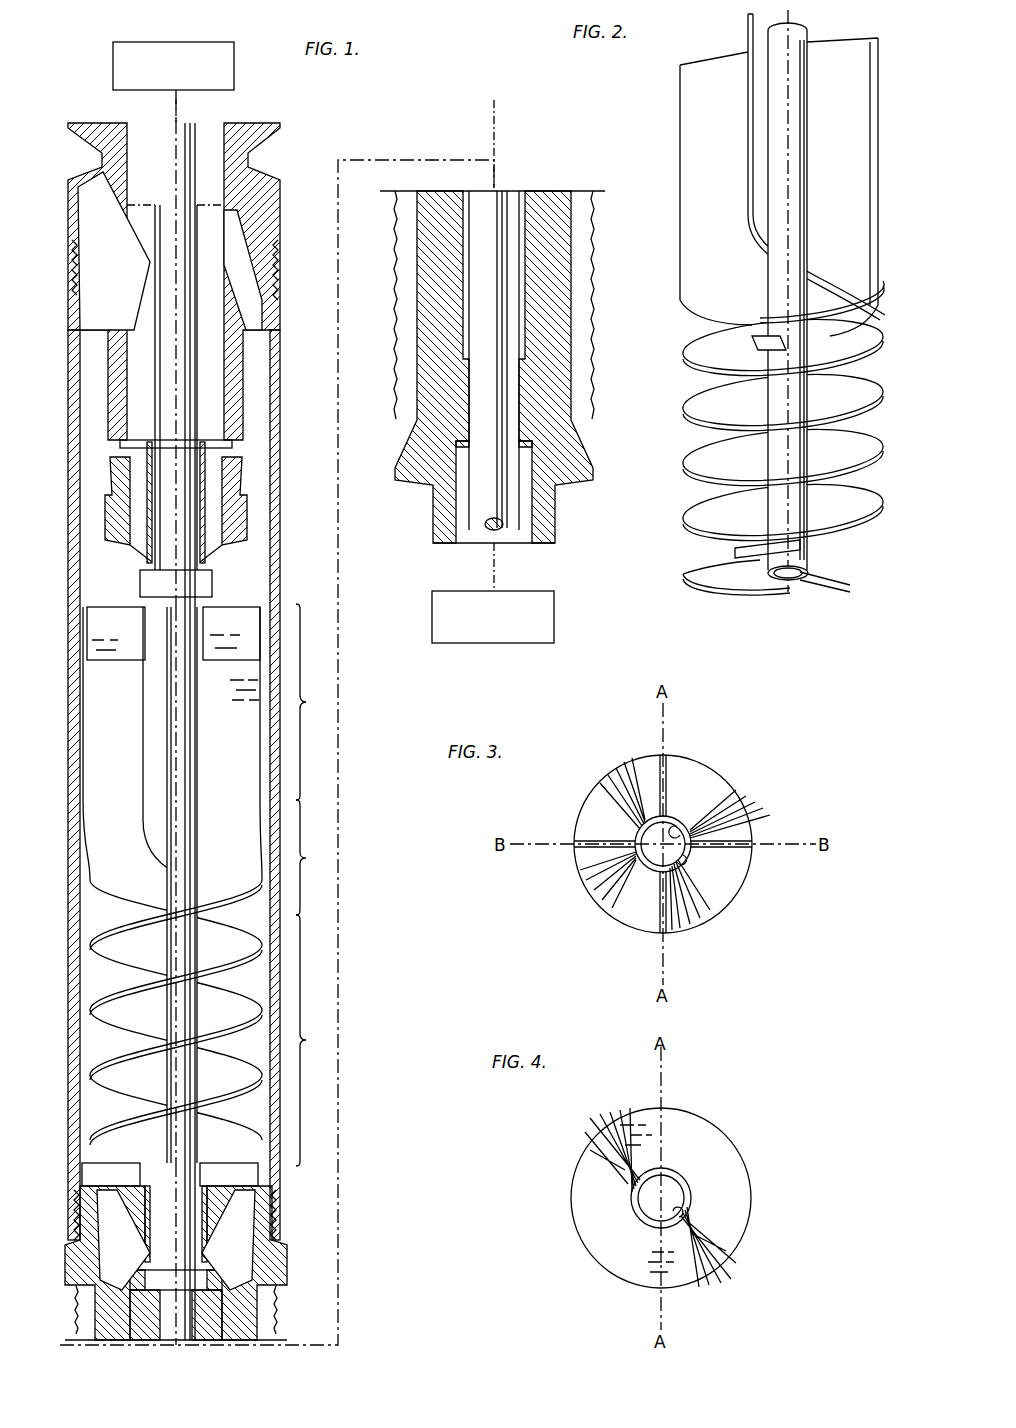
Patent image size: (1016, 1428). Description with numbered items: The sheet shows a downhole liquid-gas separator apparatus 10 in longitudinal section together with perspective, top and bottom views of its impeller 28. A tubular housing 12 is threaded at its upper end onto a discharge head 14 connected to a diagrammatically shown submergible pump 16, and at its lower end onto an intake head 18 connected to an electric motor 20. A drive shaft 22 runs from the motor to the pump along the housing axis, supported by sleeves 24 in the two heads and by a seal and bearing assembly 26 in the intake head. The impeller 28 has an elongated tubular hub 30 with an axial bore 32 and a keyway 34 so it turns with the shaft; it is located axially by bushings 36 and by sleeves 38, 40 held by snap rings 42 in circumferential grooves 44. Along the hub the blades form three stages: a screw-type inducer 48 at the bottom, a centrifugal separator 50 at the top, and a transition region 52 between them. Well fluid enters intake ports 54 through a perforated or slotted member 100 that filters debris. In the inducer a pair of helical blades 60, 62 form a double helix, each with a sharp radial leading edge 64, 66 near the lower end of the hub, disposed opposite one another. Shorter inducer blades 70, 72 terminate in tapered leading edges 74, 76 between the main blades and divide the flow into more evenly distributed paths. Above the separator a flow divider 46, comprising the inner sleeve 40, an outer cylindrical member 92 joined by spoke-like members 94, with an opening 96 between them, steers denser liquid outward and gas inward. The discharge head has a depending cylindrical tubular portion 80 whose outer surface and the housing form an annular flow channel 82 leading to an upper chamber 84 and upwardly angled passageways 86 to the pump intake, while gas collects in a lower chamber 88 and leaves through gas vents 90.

In FIG. 1, the liquid-gas separator apparatus 10 is at (54, 230).
In FIG. 1, the tubular housing 12 is at (70, 647).
In FIG. 1, the discharge head 14 is at (268, 190).
In FIG. 1, the submergible pump 16 is at (233, 42).
In FIG. 1, the intake head 18 is at (72, 1265).
In FIG. 1, the electric motor 20 is at (455, 643).
In FIG. 1, the drive shaft 22 is at (192, 138).
In FIG. 1, the sleeves 24 is at (196, 300).
In FIG. 1, the seal and bearing assembly 26 is at (176, 1316).
In FIG. 1, the impeller 28 is at (97, 981).
In FIG. 2, the impeller 28 is at (652, 120).
In FIG. 3, the impeller 28 is at (560, 890).
In FIG. 4, the impeller 28 is at (575, 1138).
In FIG. 1, the tubular hub 30 is at (196, 632).
In FIG. 2, the tubular hub 30 is at (808, 42).
In FIG. 3, the tubular hub 30 is at (642, 820).
In FIG. 4, the tubular hub 30 is at (645, 1226).
In FIG. 2, the axial bore 32 is at (775, 582).
In FIG. 3, the axial bore 32 is at (688, 855).
In FIG. 4, the axial bore 32 is at (640, 1202).
In FIG. 2, the keyway 34 is at (784, 584).
In FIG. 3, the keyway 34 is at (682, 822).
In FIG. 4, the keyway 34 is at (683, 1209).
In FIG. 1, the bushings 36 is at (145, 607).
In FIG. 1, the sleeve 38 is at (202, 1202).
In FIG. 1, the sleeve 40 is at (142, 567).
In FIG. 1, the snap rings 42 is at (148, 441).
In FIG. 1, the circumferential grooves 44 is at (170, 438).
In FIG. 1, the flow divider 46 is at (258, 532).
In FIG. 1, the screw-type inducer 48 is at (313, 1040).
In FIG. 1, the centrifugal separator 50 is at (313, 702).
In FIG. 1, the transition region 52 is at (313, 857).
In FIG. 1, the intake ports 54 is at (95, 1295).
In FIG. 1, the helical blade 60 is at (146, 885).
In FIG. 2, the helical blade 60 is at (772, 302).
In FIG. 3, the helical blade 60 is at (580, 838).
In FIG. 4, the helical blade 60 is at (572, 1182).
In FIG. 1, the helical blade 62 is at (146, 885).
In FIG. 2, the helical blade 62 is at (773, 301).
In FIG. 3, the helical blade 62 is at (736, 814).
In FIG. 4, the helical blade 62 is at (740, 1186).
In FIG. 1, the leading edge 64 is at (95, 1170).
In FIG. 2, the leading edge 64 is at (764, 540).
In FIG. 4, the leading edge 64 is at (665, 1128).
In FIG. 1, the leading edge 66 is at (239, 1175).
In FIG. 2, the leading edge 66 is at (795, 595).
In FIG. 4, the leading edge 66 is at (655, 1272).
In FIG. 1, the inducer blade 70 is at (250, 675).
In FIG. 2, the inducer blade 70 is at (698, 338).
In FIG. 3, the inducer blade 70 is at (614, 772).
In FIG. 1, the inducer blade 72 is at (128, 675).
In FIG. 2, the inducer blade 72 is at (746, 50).
In FIG. 3, the inducer blade 72 is at (656, 932).
In FIG. 1, the leading edge 74 is at (85, 906).
In FIG. 2, the leading edge 74 is at (790, 345).
In FIG. 1, the leading edge 76 is at (227, 938).
In FIG. 1, the cylindrical tubular portion 80 is at (246, 425).
In FIG. 1, the annular flow channel 82 is at (255, 385).
In FIG. 1, the upper chamber 84 is at (140, 145).
In FIG. 1, the upwardly angled passageways 86 is at (250, 280).
In FIG. 1, the lower chamber 88 is at (128, 395).
In FIG. 1, the gas vents 90 is at (96, 184).
In FIG. 1, the outer cylindrical member 92 is at (105, 522).
In FIG. 1, the spoke-like members 94 is at (214, 475).
In FIG. 1, the opening 96 is at (134, 548).
In FIG. 1, the perforated or slotted member 100 is at (608, 270).